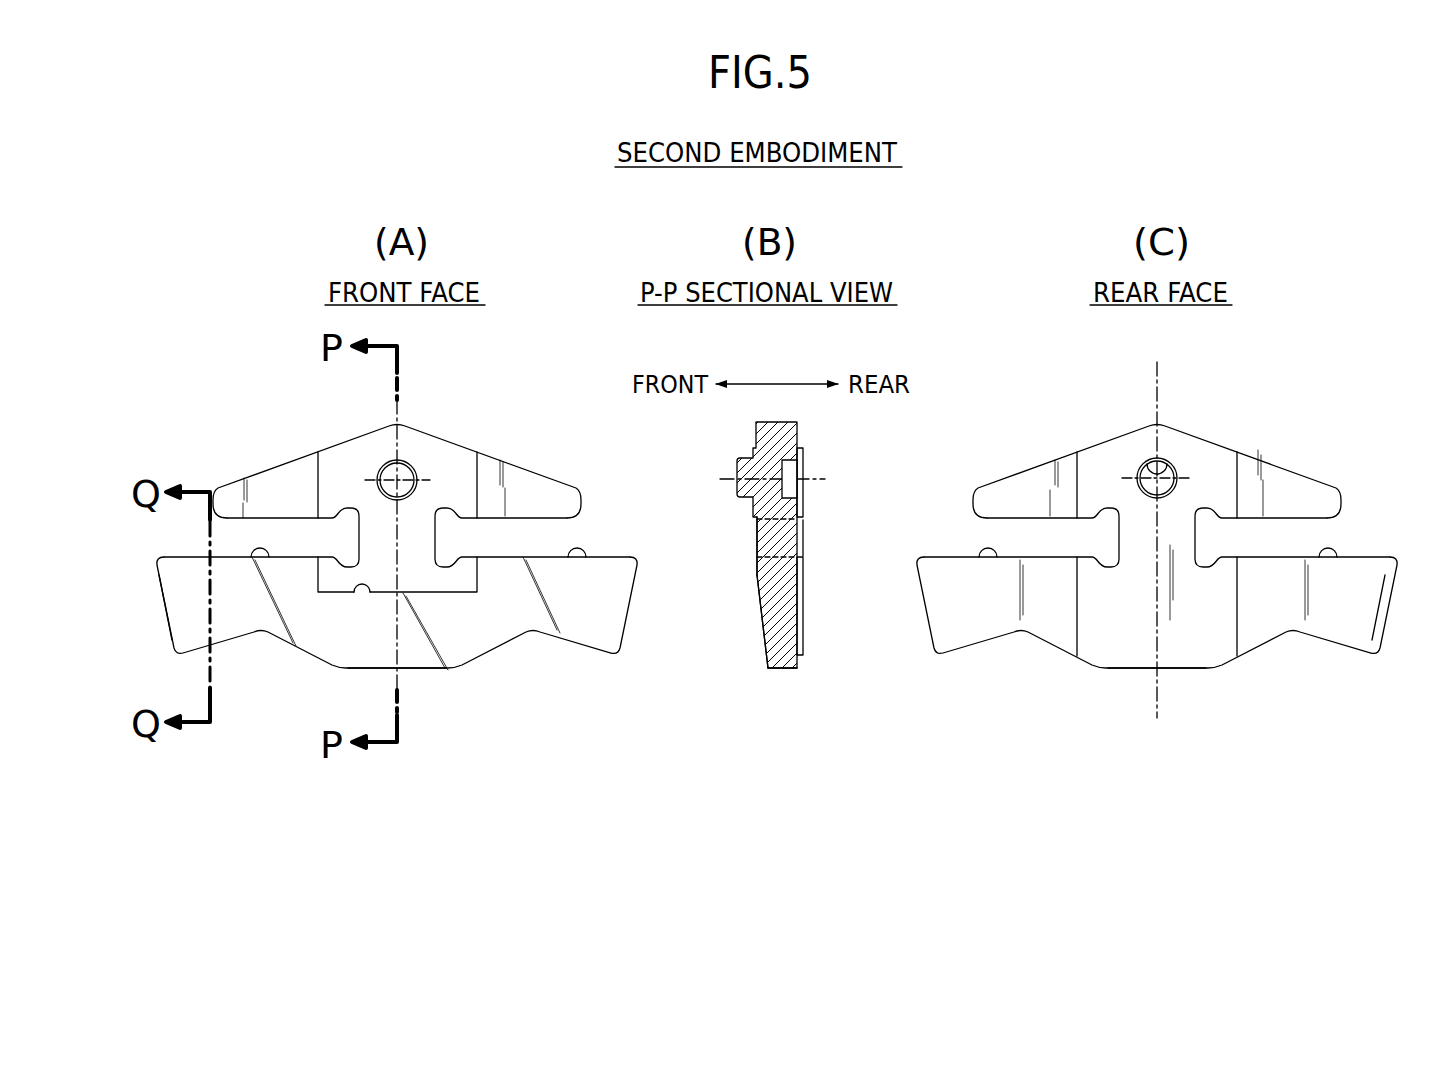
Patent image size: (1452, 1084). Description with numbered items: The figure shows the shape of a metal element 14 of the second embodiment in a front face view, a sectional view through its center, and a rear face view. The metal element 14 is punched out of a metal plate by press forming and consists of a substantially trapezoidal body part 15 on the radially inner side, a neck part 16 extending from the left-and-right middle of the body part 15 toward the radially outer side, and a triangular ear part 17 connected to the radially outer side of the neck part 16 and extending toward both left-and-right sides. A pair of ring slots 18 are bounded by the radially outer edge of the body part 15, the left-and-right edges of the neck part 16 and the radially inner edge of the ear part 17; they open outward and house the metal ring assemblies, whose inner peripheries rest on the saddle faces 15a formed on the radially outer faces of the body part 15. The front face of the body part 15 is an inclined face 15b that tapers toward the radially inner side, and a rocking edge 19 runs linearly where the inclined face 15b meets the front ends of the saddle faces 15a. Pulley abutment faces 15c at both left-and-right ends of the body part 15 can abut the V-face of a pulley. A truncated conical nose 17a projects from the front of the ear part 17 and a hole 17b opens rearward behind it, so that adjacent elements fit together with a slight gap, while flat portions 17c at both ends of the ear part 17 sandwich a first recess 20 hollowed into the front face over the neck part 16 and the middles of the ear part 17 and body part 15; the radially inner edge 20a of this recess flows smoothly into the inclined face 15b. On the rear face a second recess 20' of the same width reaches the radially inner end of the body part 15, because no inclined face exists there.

The metal element 14 is at (507, 442).
The body part 15 is at (313, 660).
The saddle face 15a is at (251, 559).
The inclined face 15b is at (470, 638).
The pulley abutment face 15c is at (171, 620).
The neck part 16 is at (422, 548).
The ear part 17 is at (296, 455).
The nose 17a is at (402, 476).
The hole 17b is at (785, 468).
The flat portion 17c is at (278, 480).
The ring slot 18 is at (277, 538).
The rocking edge 19 is at (228, 560).
The first recess 20 is at (572, 533).
The second recess 20' is at (989, 530).
The radially inner edge 20a is at (362, 601).